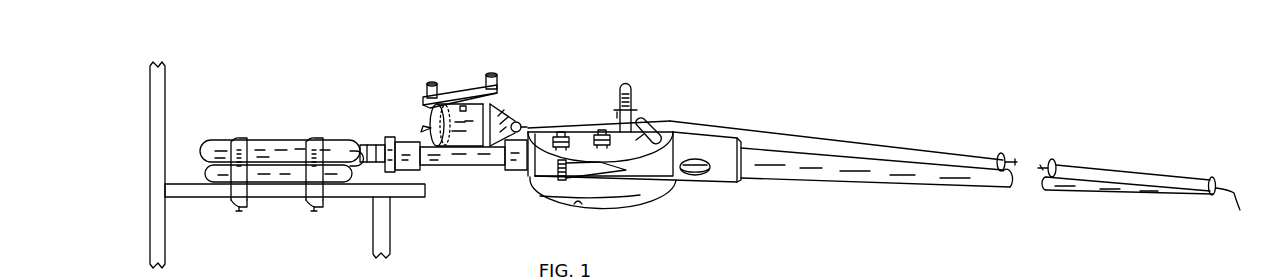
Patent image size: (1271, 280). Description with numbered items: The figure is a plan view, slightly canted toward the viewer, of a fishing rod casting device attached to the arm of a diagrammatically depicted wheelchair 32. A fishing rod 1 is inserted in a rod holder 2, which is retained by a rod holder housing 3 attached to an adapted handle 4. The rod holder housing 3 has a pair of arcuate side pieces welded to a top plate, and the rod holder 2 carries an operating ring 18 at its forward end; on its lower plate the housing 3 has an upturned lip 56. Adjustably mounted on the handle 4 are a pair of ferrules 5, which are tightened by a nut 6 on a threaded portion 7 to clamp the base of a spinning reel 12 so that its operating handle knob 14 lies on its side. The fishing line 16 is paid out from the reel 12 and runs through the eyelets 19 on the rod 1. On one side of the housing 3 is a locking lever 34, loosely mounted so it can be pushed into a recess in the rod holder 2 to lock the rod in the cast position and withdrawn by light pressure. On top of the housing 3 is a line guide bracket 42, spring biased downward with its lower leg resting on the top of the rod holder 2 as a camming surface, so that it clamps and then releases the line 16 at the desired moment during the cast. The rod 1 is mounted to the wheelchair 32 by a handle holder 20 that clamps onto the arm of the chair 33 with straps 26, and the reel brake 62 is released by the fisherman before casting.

The fishing rod 1 is at (818, 180).
The rod holder 2 is at (676, 184).
The rod holder housing 3 is at (630, 200).
The handle 4 is at (366, 146).
The ferrules 5 is at (421, 172).
The nut 6 is at (390, 134).
The threaded portion 7 is at (380, 143).
The spinning reel 12 is at (508, 108).
The operating handle knob 14 is at (493, 72).
The fishing line 16 is at (797, 132).
The operating ring 18 is at (703, 176).
The eyelets 19 is at (1001, 152).
The handle holder 20 is at (285, 138).
The straps 26 is at (312, 208).
The wheelchair 32 is at (166, 90).
The arm of the chair 33 is at (180, 198).
The locking lever 34 is at (648, 124).
The line guide bracket 42 is at (630, 86).
The upturned lip 56 is at (580, 206).
The brake 62 is at (428, 122).